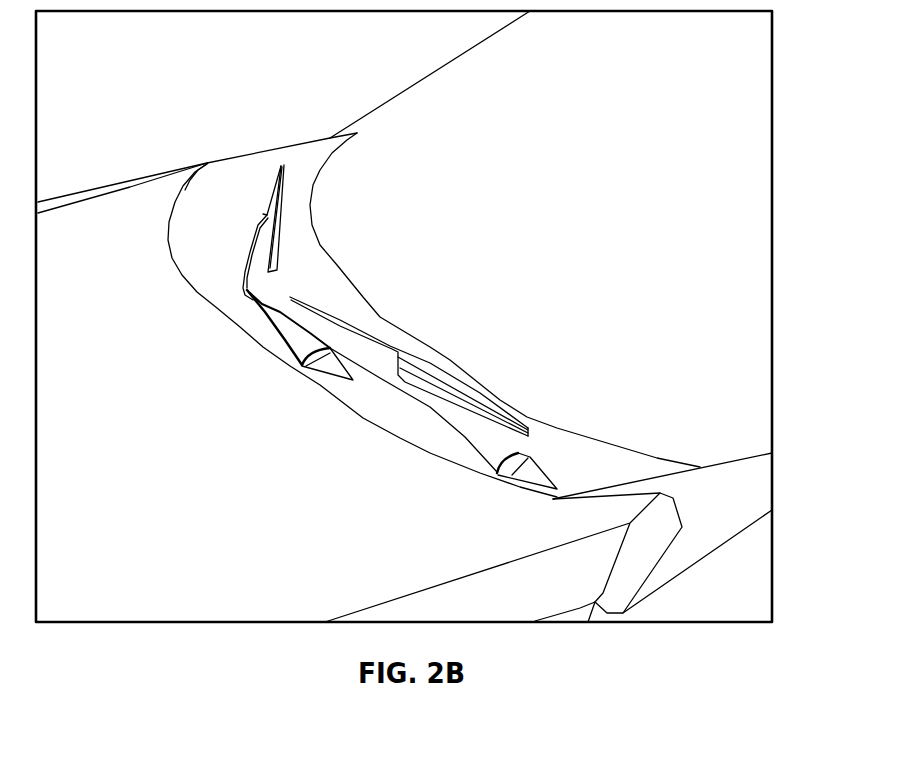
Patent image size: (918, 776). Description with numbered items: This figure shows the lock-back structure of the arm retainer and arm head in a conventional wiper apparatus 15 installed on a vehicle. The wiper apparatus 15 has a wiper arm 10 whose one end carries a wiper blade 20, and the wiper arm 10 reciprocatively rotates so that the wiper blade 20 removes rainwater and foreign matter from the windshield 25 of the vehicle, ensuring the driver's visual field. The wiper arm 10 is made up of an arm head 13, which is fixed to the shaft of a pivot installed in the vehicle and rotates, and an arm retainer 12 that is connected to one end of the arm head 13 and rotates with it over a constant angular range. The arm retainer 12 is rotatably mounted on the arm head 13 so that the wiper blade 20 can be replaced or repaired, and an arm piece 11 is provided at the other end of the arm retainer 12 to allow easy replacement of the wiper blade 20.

The wiper arm 10 is at (555, 294).
The arm piece 11 is at (420, 350).
The arm retainer 12 is at (471, 432).
The arm head 13 is at (537, 470).
The wiper apparatus 15 is at (456, 290).
The wiper blade 20 is at (367, 347).
The windshield 25 is at (715, 235).